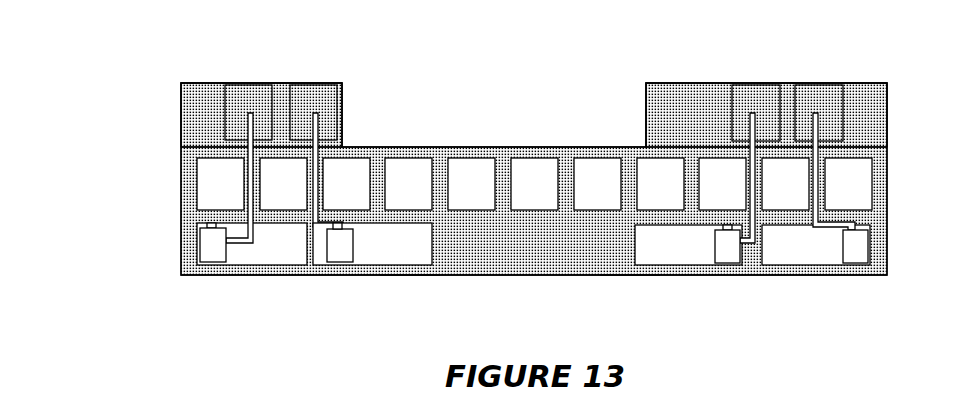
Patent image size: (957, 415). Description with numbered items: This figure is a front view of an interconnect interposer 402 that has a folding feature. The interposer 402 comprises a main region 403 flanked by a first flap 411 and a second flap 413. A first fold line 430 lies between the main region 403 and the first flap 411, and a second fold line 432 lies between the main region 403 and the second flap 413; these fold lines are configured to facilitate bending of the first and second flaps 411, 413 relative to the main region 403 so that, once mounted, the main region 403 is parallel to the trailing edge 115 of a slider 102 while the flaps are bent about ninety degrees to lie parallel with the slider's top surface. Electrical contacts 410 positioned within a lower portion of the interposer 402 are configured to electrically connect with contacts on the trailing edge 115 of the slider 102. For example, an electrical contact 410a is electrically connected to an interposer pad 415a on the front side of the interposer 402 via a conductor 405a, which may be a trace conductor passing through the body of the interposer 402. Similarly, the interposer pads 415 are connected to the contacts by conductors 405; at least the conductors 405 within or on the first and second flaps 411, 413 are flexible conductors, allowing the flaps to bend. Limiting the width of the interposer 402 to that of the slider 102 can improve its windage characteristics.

The interposer 402 is at (181, 117).
The first flap 411 is at (205, 83).
The second flap 413 is at (702, 84).
The first fold line 430 is at (343, 144).
The second fold line 432 is at (645, 144).
The interposer pad 415 is at (587, 175).
The interposer pad 415a is at (252, 83).
The electrical contact 410a is at (212, 242).
The conductor 405a is at (253, 238).
The electrical contacts 410 is at (732, 262).
The conductors 405 is at (762, 245).
The slider 102 is at (410, 275).
The main region 403 is at (547, 235).
The trailing edge 115 is at (627, 275).